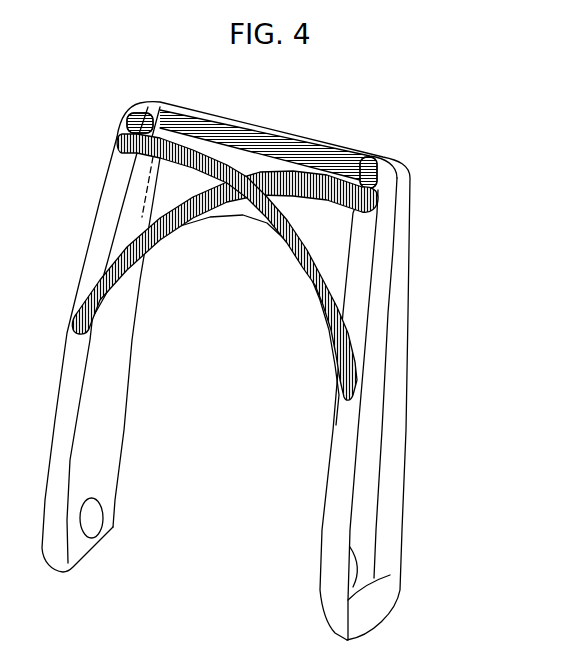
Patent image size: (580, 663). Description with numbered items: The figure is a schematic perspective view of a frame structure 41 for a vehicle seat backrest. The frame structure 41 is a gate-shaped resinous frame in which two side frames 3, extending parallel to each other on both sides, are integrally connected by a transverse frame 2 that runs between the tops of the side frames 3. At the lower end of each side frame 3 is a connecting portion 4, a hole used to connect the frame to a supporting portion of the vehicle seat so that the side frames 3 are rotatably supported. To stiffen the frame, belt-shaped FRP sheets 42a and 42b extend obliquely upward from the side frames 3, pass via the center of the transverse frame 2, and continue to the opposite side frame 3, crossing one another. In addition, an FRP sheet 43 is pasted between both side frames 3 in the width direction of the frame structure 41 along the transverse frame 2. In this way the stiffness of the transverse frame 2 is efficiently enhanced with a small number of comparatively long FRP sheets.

The transverse frame 2 is at (317, 212).
The side frames 3 is at (113, 405).
The connecting portions 4 is at (92, 518).
The frame structure 41 is at (447, 182).
The belt-shaped FRP sheet 42a is at (166, 222).
The belt-shaped FRP sheet 42b is at (313, 287).
The FRP sheet 43 is at (230, 138).